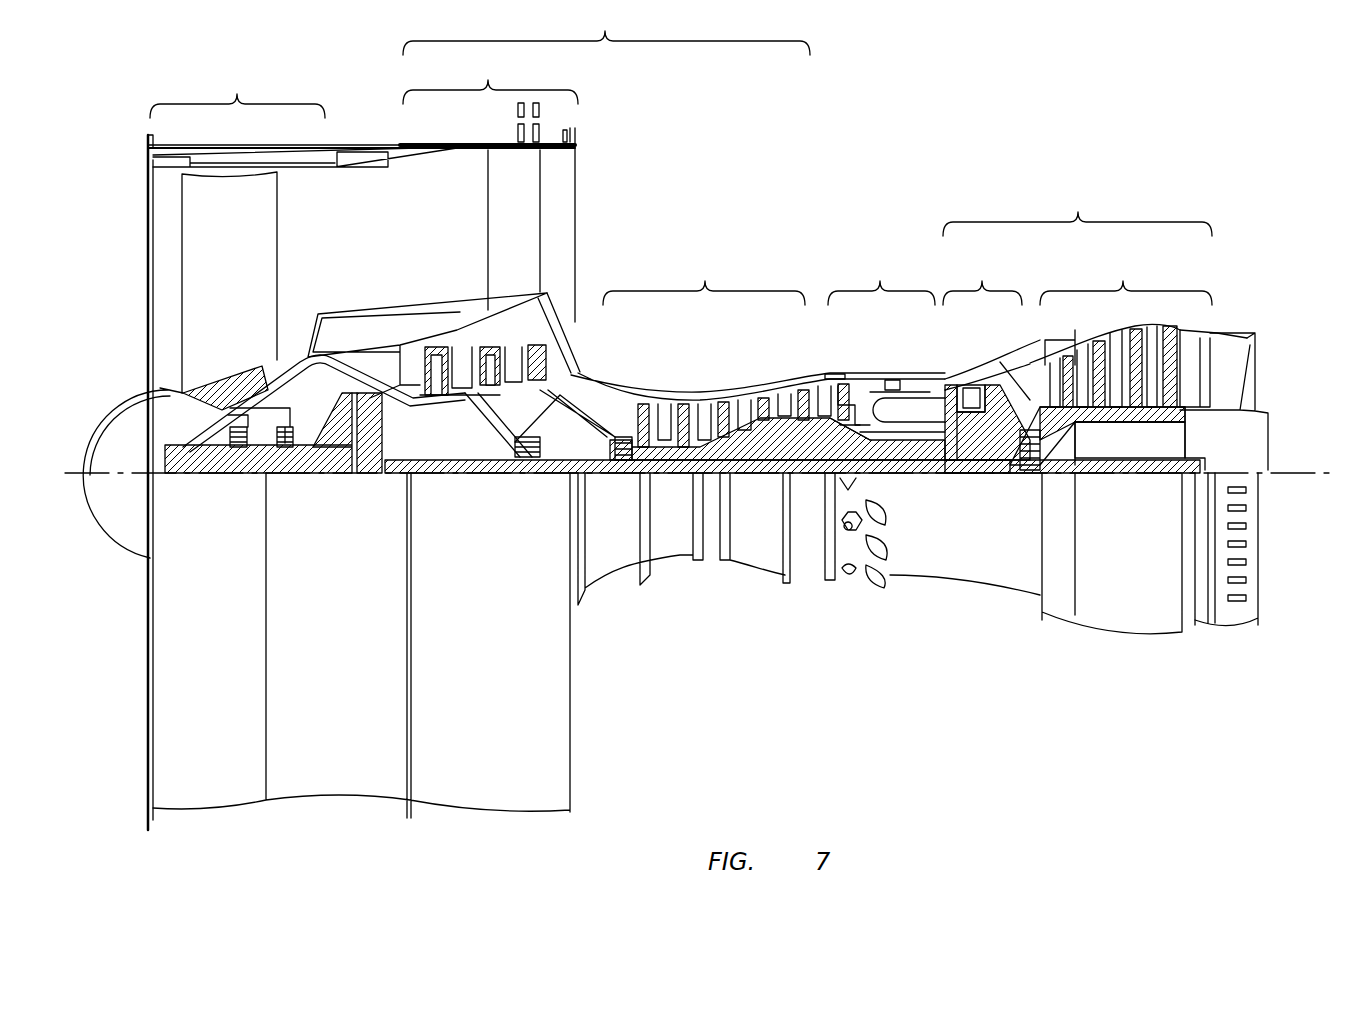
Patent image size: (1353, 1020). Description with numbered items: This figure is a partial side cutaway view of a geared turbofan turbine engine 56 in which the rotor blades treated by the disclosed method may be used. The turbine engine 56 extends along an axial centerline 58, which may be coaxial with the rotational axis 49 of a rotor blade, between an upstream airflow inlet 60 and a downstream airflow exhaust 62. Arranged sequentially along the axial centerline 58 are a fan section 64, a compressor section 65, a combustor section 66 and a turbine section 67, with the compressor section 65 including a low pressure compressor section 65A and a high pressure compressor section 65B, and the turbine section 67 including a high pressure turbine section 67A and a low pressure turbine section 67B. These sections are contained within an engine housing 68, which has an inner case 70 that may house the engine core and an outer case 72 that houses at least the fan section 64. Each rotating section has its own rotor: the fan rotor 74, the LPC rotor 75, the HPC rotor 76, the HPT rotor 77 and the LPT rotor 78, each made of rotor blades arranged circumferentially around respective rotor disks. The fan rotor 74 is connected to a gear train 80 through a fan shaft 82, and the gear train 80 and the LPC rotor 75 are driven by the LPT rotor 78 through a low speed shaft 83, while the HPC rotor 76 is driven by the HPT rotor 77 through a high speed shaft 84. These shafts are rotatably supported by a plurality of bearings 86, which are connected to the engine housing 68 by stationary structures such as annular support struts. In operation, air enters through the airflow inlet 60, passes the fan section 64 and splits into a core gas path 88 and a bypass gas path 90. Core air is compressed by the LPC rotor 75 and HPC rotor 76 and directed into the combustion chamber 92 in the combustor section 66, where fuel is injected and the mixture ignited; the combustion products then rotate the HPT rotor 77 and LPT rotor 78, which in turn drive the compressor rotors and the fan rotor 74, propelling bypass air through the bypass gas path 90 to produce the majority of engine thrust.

The geared turbofan turbine engine 56 is at (109, 113).
The airflow inlet 60 is at (148, 212).
The fan section 64 is at (237, 227).
The bypass gas path 90 is at (408, 250).
The compressor section 65 is at (559, 199).
The low pressure compressor section 65A is at (489, 95).
The high pressure compressor section 65B is at (726, 348).
The core gas path 88 is at (598, 400).
The combustor section 66 is at (885, 342).
The combustion chamber 92 is at (895, 412).
The turbine section 67 is at (1095, 322).
The high pressure turbine section 67A is at (991, 356).
The low pressure turbine section 67B is at (1128, 361).
The airflow exhaust 62 is at (1257, 366).
The fan rotor 74 is at (160, 390).
The fan shaft 82 is at (215, 478).
The gear train 80 is at (362, 478).
The bearings 86 is at (285, 458).
The LPC rotor 75 is at (472, 440).
The HPC rotor 76 is at (755, 440).
The high speed shaft 84 is at (898, 448).
The HPT rotor 77 is at (976, 462).
The LPT rotor 78 is at (1118, 423).
The low speed shaft 83 is at (1128, 485).
The axial centerline 58 is at (1268, 549).
The rotational axis 49 is at (1226, 549).
The engine housing 68 is at (614, 604).
The inner case 70 is at (808, 578).
The outer case 72 is at (528, 820).